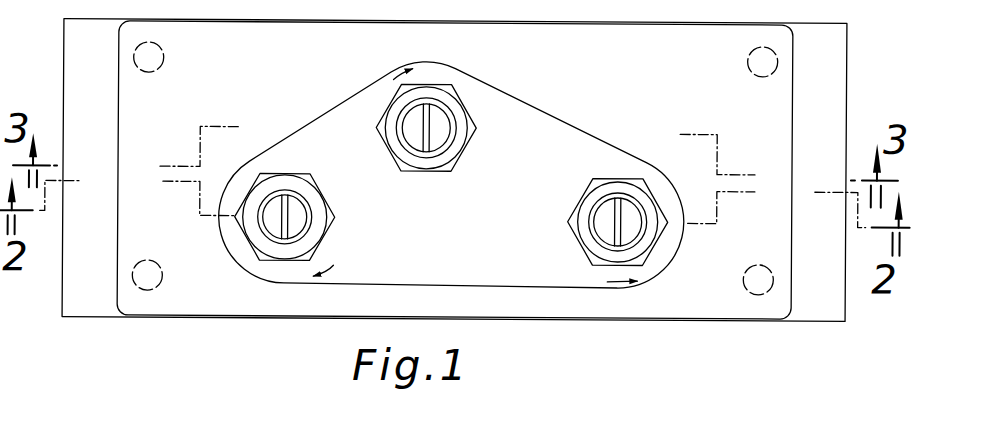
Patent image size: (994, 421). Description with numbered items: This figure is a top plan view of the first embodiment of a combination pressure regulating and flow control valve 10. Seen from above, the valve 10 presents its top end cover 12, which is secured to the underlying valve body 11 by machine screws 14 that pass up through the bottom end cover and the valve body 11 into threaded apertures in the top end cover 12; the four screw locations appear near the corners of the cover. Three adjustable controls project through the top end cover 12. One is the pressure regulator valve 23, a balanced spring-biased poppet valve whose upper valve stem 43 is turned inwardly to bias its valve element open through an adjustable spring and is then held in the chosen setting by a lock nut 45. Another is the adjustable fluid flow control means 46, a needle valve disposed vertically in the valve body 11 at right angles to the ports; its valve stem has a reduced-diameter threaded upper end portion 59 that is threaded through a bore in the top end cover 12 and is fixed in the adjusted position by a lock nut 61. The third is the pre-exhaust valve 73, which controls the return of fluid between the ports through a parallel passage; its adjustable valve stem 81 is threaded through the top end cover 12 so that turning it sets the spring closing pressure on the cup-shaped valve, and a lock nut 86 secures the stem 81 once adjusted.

The combination pressure regulating and flow control valve 10 is at (209, 322).
The valve body 11 is at (805, 305).
The top end cover 12 is at (653, 306).
The machine screws 14 is at (152, 50).
The pressure regulator valve 23 is at (656, 195).
The upper valve stem 43 is at (634, 222).
The lock nut 45 is at (645, 245).
The adjustable fluid flow control means 46 is at (242, 227).
The threaded upper end portion of valve stem 59 is at (272, 228).
The lock nut 61 is at (283, 258).
The pre-exhaust valve 73 is at (458, 123).
The adjustable valve stem 81 is at (440, 120).
The lock nut 86 is at (468, 108).